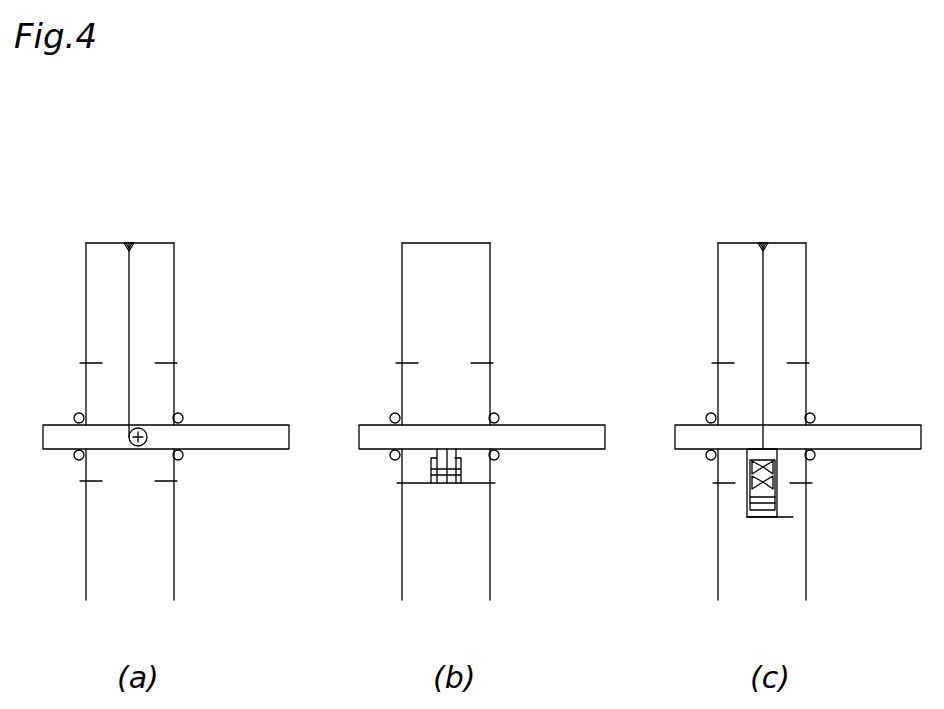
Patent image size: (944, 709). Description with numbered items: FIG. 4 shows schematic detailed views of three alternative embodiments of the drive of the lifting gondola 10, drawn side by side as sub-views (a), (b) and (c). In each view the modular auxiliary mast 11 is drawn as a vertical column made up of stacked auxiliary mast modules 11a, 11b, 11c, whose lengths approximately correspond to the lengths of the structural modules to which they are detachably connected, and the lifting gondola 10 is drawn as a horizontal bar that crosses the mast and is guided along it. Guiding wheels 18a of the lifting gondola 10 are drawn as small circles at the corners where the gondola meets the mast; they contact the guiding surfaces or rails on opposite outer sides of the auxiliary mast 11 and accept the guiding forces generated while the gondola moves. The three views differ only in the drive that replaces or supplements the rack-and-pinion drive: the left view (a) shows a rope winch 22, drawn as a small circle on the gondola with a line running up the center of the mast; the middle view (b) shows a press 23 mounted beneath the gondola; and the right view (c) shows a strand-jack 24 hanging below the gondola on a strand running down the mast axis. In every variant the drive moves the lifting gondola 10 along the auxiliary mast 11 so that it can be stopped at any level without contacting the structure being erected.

The lifting gondola 10 is at (275, 442).
The auxiliary mast 11 is at (186, 251).
The auxiliary mast module 11a is at (165, 529).
The auxiliary mast module 11b is at (165, 389).
The auxiliary mast module 11c is at (168, 312).
The guiding wheels 18a is at (183, 416).
The rope winch 22 is at (139, 458).
The press 23 is at (441, 490).
The strand-jack 24 is at (753, 525).